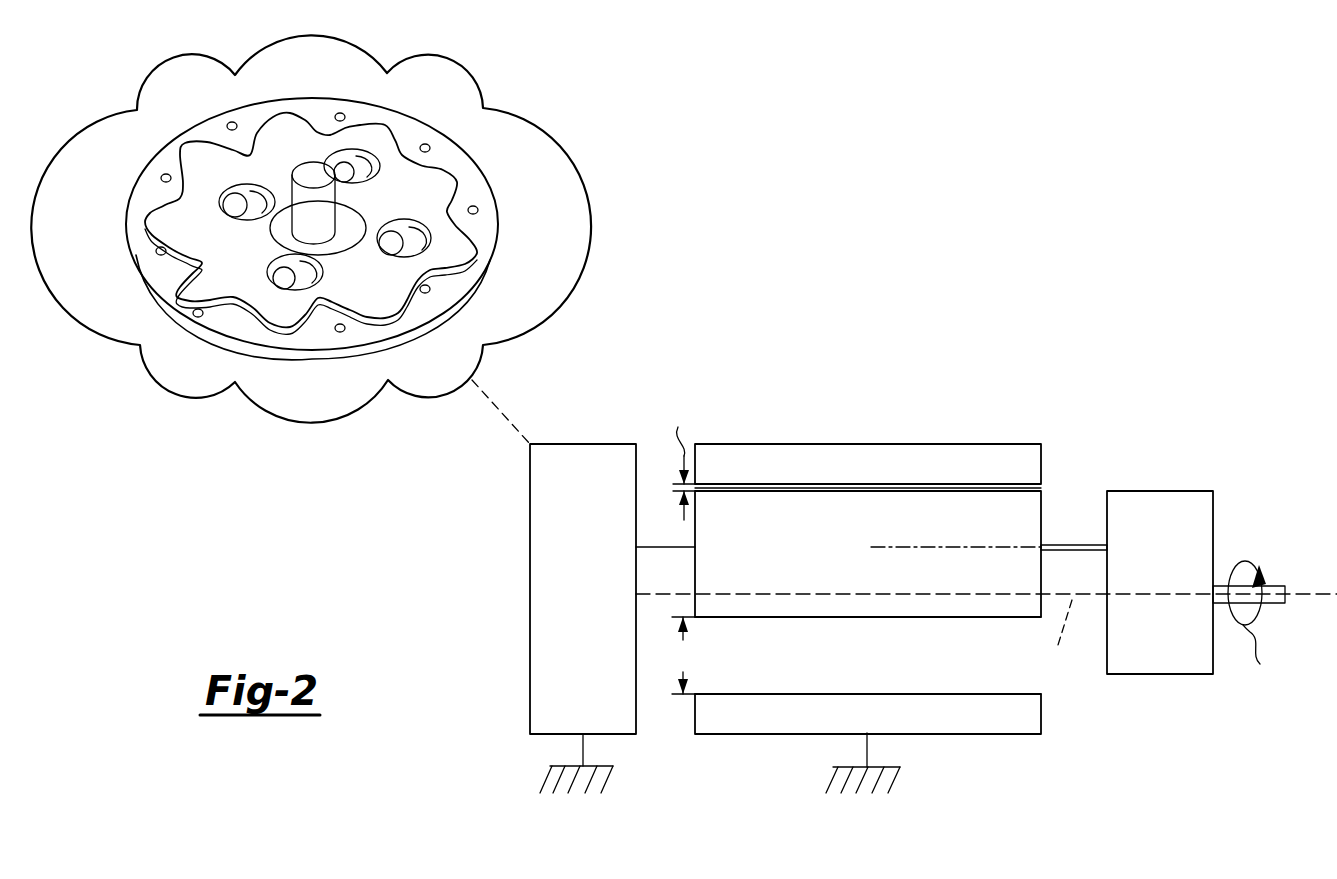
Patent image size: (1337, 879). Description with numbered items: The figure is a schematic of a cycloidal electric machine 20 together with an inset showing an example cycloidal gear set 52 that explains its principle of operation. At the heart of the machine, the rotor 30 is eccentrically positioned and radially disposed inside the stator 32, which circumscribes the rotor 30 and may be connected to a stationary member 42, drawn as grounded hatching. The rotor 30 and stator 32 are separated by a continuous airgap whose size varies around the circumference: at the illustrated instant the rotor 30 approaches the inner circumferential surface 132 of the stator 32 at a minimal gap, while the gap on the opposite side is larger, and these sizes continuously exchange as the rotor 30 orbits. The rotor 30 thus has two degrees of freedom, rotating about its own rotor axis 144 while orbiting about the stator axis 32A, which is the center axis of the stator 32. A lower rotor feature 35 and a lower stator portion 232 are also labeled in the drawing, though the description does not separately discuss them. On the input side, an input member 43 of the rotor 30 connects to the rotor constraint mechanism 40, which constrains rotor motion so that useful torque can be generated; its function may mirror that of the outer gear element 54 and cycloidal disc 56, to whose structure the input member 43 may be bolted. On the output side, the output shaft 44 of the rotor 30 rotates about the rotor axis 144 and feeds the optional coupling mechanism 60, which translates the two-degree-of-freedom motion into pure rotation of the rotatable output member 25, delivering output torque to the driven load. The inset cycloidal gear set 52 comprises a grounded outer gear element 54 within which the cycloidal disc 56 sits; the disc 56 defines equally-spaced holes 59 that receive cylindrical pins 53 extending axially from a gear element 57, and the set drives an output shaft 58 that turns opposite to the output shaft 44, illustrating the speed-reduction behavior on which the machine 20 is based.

The cycloidal electric machine 20 is at (1028, 322).
The rotatable output member 25 is at (1262, 587).
The rotor 30 is at (779, 558).
The stator 32 is at (979, 478).
The stator axis 32A is at (1059, 637).
The rotor bottom surface 35 is at (935, 617).
The rotor constraint mechanism 40 is at (530, 530).
The stationary member 42 is at (540, 780).
The input member 43 is at (665, 547).
The output shaft 44 is at (1071, 545).
The cycloidal gear set 52 is at (549, 110).
The pins 53 is at (265, 280).
The outer gear element 54 is at (222, 128).
The cycloidal disc 56 is at (202, 263).
The gear element 57 is at (415, 246).
The output shaft 58 is at (312, 178).
The equally-spaced holes 59 is at (325, 282).
The coupling mechanism 60 is at (1175, 491).
The inner circumferential surface 132 is at (1020, 489).
The rotor axis 144 is at (925, 547).
The second stator gap surface 232 is at (1015, 694).